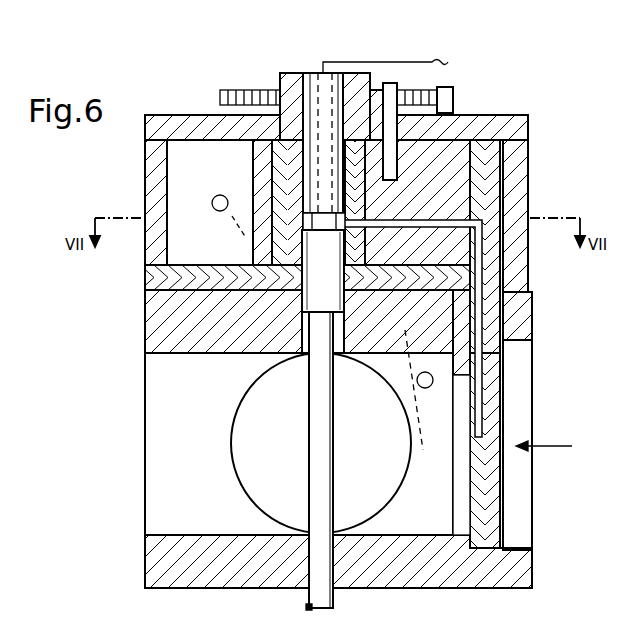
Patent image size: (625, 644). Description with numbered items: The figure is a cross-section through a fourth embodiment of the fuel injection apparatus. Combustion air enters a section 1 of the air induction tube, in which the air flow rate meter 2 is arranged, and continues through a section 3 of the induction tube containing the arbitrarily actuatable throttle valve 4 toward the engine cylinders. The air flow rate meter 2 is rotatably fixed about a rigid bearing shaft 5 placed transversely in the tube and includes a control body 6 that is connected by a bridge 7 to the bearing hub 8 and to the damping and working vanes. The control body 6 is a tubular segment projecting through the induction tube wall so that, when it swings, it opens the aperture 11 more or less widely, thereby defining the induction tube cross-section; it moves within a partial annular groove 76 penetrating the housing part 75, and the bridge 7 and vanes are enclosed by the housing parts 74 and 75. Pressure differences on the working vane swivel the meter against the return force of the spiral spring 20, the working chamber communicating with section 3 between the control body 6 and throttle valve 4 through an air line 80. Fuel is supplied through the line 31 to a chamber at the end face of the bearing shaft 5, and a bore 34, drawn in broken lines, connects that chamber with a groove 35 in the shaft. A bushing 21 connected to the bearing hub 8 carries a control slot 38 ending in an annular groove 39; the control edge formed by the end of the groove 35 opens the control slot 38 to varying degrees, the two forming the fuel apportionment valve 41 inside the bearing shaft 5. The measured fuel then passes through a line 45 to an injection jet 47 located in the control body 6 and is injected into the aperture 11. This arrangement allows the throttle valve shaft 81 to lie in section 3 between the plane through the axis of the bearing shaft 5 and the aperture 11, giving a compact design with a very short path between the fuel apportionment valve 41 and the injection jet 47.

The section of the air induction tube 1 is at (512, 568).
The air flow rate meter 2 is at (527, 116).
The section of the air induction tube 3 is at (452, 577).
The throttle valve 4 is at (250, 478).
The bearing shaft 5 is at (313, 88).
The control body 6 is at (488, 172).
The bridge 7 is at (455, 160).
The bearing hub 8 is at (268, 238).
The aperture 11 is at (468, 517).
The spiral spring 20 is at (440, 92).
The bushing 21 is at (297, 263).
The line 31 is at (397, 63).
The bore 34 is at (336, 88).
The groove 35 is at (262, 190).
The control slot 38 is at (323, 271).
The annular groove 39 is at (260, 210).
The fuel apportionment valve 41 is at (337, 213).
The line 45 is at (490, 284).
The injection jet 47 is at (468, 462).
The housing part 74 is at (522, 136).
The housing part 75 is at (172, 278).
The partial annular groove 76 is at (512, 332).
The air line 80 is at (424, 402).
The throttle valve shaft 81 is at (318, 570).